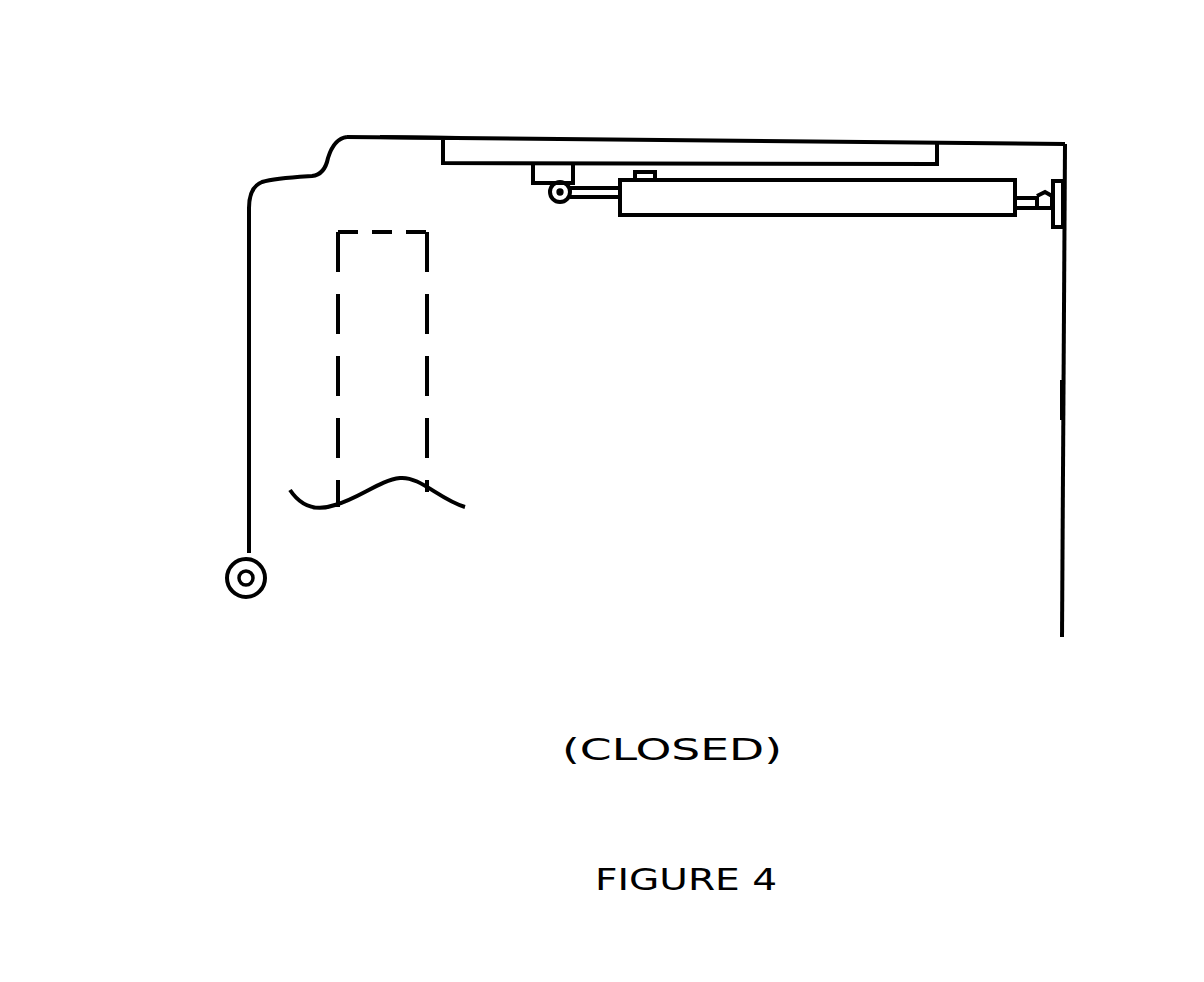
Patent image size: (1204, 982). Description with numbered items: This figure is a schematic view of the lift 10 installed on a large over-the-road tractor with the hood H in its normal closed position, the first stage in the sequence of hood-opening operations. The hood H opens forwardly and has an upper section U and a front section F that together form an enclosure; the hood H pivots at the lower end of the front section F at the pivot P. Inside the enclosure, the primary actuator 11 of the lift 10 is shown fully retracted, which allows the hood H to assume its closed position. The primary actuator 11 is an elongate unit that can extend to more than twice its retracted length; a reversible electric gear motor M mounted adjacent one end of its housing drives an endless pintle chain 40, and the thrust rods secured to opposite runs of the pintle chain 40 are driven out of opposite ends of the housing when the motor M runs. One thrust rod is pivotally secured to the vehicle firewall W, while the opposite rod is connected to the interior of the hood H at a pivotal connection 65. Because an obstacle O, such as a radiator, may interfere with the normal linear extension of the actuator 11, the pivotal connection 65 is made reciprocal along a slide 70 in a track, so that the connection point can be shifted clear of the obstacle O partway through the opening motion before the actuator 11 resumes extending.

The lift 10 is at (796, 439).
The primary actuator 11 is at (780, 200).
The pintle chain 40 is at (920, 218).
The pivotal connection 65 is at (573, 183).
The slide 70 is at (557, 140).
The upper section U is at (420, 137).
The hood H is at (847, 140).
The gear motor M is at (652, 150).
The front section F is at (249, 380).
The obstacle O is at (395, 450).
The pivot P is at (275, 578).
The firewall W is at (1070, 405).